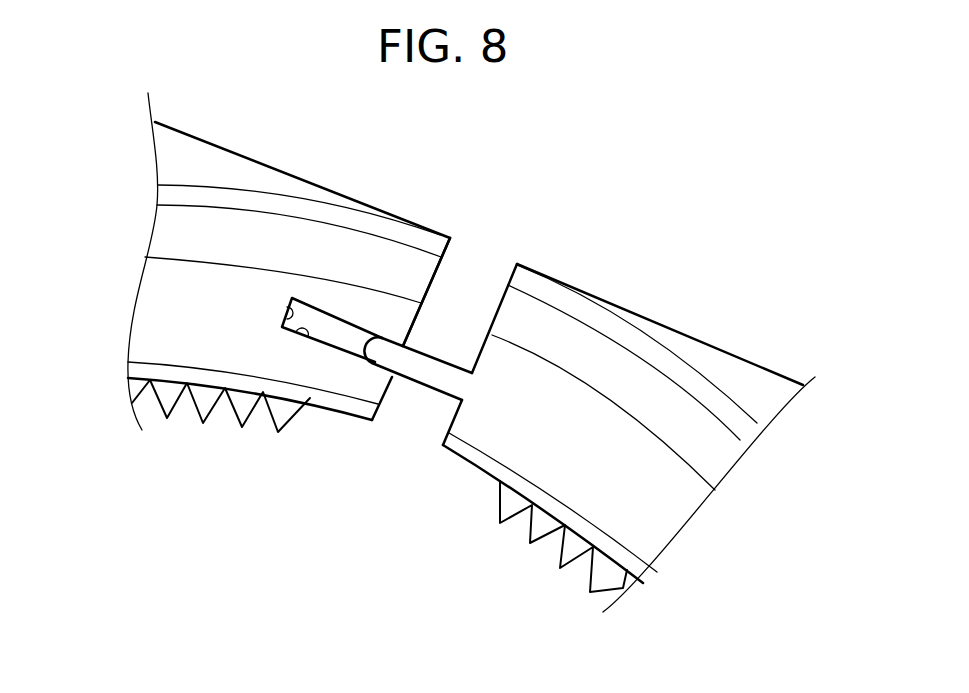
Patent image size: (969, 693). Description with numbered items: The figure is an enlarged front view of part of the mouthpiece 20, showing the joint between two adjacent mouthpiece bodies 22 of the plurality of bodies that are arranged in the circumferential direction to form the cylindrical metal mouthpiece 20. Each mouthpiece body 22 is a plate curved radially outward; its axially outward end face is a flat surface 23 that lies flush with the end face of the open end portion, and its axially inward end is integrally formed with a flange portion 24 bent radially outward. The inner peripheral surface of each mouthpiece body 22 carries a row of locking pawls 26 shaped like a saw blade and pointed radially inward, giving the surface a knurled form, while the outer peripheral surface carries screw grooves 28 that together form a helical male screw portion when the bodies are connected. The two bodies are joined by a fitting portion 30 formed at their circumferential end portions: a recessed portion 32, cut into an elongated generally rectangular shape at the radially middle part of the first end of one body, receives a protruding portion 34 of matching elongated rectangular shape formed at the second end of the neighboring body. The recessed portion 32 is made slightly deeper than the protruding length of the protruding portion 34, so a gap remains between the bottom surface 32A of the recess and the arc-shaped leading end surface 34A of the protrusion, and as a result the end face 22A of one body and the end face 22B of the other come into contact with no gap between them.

The mouthpiece 20 is at (548, 240).
The mouthpiece body 22 is at (154, 326).
The end face 22A is at (413, 327).
The end face 22B is at (487, 343).
The flat surface 23 is at (150, 350).
The flange portion 24 is at (205, 167).
The locking pawl 26 is at (167, 419).
The screw groove 28 is at (267, 205).
The fitting portion 30 is at (405, 417).
The recessed portion 32 is at (297, 338).
The bottom surface 32A is at (288, 316).
The protruding portion 34 is at (425, 384).
The leading end surface 34A is at (377, 347).